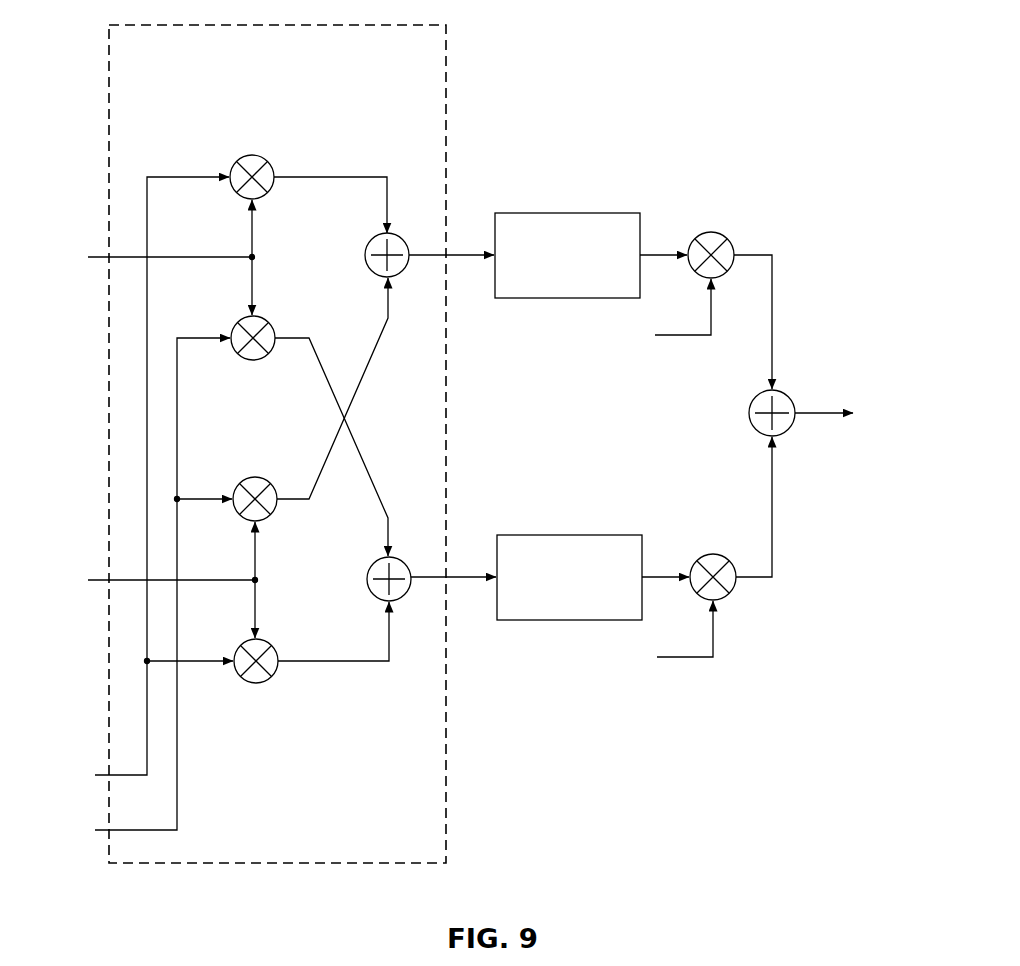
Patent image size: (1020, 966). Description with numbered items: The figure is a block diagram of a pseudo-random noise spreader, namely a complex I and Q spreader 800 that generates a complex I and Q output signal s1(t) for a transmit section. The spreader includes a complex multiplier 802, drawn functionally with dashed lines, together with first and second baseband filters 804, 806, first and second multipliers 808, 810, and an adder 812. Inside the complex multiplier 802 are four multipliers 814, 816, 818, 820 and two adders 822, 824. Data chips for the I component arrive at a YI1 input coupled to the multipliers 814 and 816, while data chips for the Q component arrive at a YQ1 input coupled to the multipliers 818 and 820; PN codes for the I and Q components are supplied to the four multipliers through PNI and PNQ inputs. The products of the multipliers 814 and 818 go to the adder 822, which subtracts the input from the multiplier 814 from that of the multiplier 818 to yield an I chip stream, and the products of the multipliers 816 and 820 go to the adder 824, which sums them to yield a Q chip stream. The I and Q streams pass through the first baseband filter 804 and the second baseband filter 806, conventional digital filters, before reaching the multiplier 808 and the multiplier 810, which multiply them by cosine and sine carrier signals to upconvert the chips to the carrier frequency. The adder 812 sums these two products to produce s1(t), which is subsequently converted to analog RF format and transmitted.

The complex I and Q spreader 800 is at (656, 68).
The complex multiplier 802 is at (382, 26).
The first baseband filter 804 is at (582, 213).
The second baseband filter 806 is at (580, 535).
The first multiplier 808 is at (714, 232).
The second multiplier 810 is at (729, 593).
The adder 812 is at (788, 398).
The multiplier 814 is at (259, 157).
The multiplier 816 is at (262, 319).
The multiplier 818 is at (255, 477).
The multiplier 820 is at (255, 683).
The adder 822 is at (366, 252).
The adder 824 is at (368, 576).